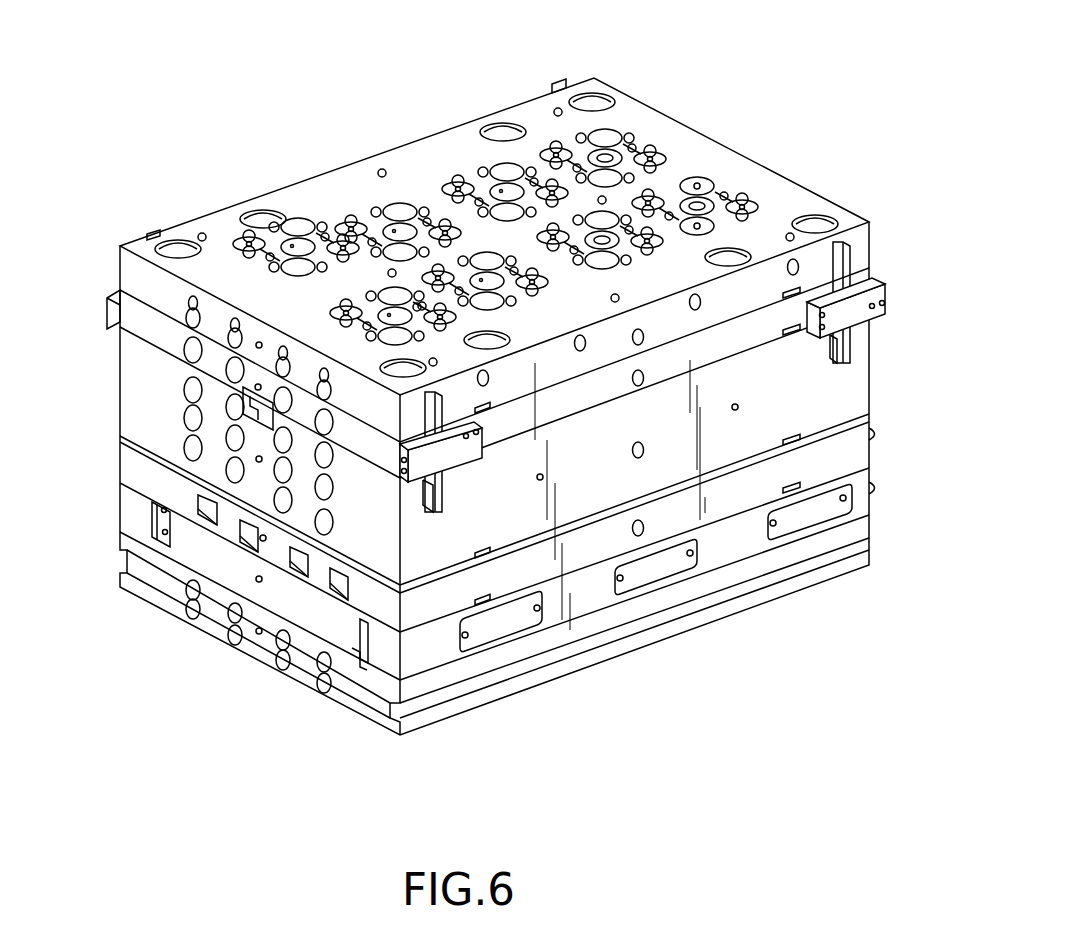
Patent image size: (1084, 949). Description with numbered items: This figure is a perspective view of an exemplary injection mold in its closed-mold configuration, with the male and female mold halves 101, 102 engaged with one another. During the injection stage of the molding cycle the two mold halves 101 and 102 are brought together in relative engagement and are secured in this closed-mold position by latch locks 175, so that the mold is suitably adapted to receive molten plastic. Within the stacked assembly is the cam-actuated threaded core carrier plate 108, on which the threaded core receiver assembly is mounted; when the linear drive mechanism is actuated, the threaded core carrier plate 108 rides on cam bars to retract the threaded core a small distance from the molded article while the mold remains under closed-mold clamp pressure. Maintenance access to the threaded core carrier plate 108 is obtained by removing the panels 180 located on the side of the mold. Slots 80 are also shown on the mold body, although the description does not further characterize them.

The mold half 101 is at (866, 378).
The mold half 102 is at (718, 157).
The latch lock 175 is at (552, 80).
The threaded core carrier plate 108 is at (183, 553).
The slots 80 is at (212, 513).
The panel 180 is at (510, 617).